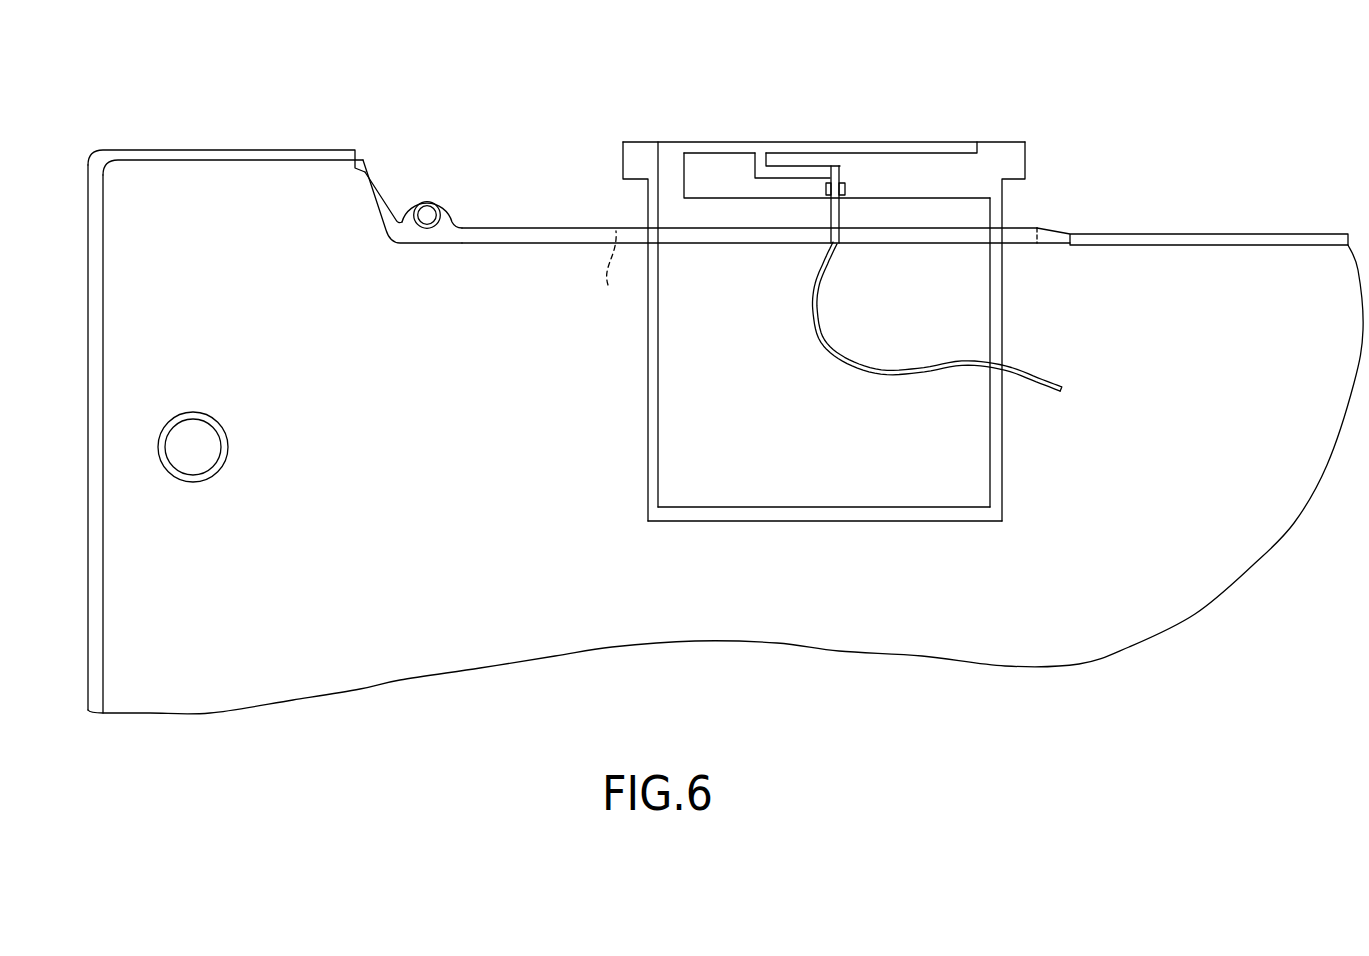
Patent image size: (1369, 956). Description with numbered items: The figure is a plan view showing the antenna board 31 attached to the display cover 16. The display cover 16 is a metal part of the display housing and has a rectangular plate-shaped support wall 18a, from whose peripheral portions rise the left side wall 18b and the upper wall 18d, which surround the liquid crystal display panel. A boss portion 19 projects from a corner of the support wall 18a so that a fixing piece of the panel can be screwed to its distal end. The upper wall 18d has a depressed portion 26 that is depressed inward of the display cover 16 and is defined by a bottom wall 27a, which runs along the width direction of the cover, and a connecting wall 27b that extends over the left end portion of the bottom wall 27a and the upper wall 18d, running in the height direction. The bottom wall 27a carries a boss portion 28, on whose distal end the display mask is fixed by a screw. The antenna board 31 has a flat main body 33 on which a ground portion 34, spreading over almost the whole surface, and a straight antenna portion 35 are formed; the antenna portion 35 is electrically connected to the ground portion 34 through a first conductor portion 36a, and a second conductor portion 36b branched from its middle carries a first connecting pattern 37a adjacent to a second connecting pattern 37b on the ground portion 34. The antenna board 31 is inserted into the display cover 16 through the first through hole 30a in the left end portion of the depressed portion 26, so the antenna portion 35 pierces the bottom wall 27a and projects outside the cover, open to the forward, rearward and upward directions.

The display cover 16 is at (695, 435).
The support wall 18a is at (230, 713).
The left side wall 18b is at (88, 572).
The upper wall 18d is at (230, 163).
The boss portion 19 is at (229, 447).
The depressed portion 26 is at (828, 219).
The bottom wall 27a is at (1182, 245).
The connecting wall 27b is at (372, 205).
The boss portion 28 is at (428, 190).
The first through hole 30a is at (611, 269).
The antenna board 31 is at (844, 339).
The main body 33 is at (1003, 452).
The ground portion 34 is at (869, 493).
The antenna portion 35 is at (899, 147).
The first conductor portion 36a is at (673, 168).
The second conductor portion 36b is at (790, 175).
The first connecting pattern 37a is at (845, 171).
The second connecting pattern 37b is at (845, 188).